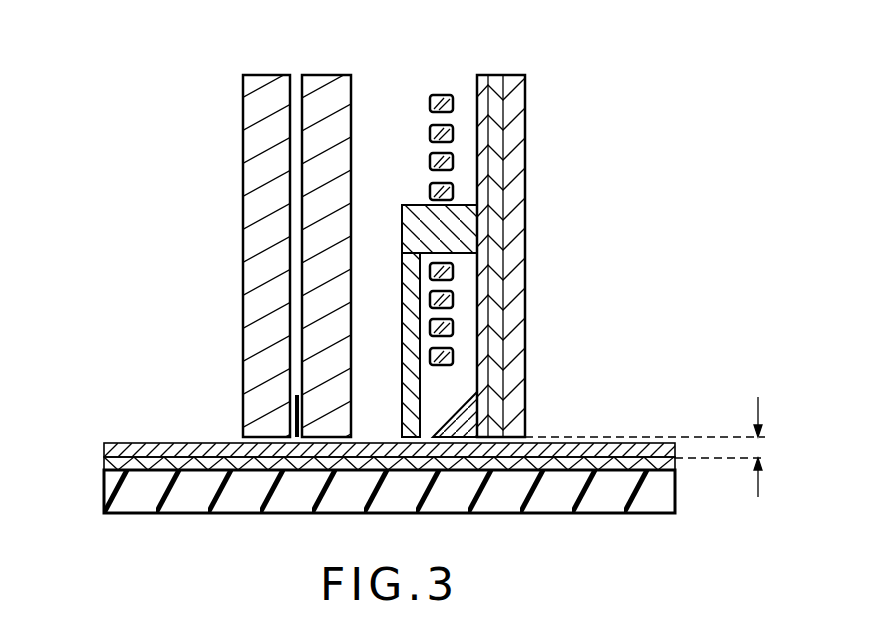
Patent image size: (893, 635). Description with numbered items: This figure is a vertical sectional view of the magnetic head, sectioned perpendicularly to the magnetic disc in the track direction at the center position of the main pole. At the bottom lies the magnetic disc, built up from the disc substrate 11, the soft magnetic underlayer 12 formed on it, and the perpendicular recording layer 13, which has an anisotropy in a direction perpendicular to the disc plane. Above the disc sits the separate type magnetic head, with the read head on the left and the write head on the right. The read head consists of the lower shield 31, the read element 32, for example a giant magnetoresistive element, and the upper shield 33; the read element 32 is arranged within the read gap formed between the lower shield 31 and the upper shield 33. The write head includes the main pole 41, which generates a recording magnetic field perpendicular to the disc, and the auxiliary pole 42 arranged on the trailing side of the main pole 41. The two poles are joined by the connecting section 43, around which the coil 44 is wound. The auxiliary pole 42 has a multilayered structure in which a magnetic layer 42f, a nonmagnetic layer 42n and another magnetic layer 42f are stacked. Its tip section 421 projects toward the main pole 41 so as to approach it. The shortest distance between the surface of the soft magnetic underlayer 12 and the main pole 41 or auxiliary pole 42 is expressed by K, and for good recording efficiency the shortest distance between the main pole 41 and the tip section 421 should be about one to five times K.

The disc substrate 11 is at (110, 494).
The soft magnetic underlayer 12 is at (110, 460).
The perpendicular recording layer 13 is at (110, 444).
The lower shield 31 is at (270, 78).
The read element 32 is at (297, 405).
The upper shield 33 is at (329, 78).
The main pole 41 is at (402, 347).
The auxiliary pole 42 is at (508, 238).
The magnetic layer 42f is at (485, 77).
The nonmagnetic layer 42n is at (501, 77).
The tip section 421 is at (470, 418).
The connecting section 43 is at (420, 212).
The coil 44 is at (430, 96).
The shortest distance K is at (656, 447).